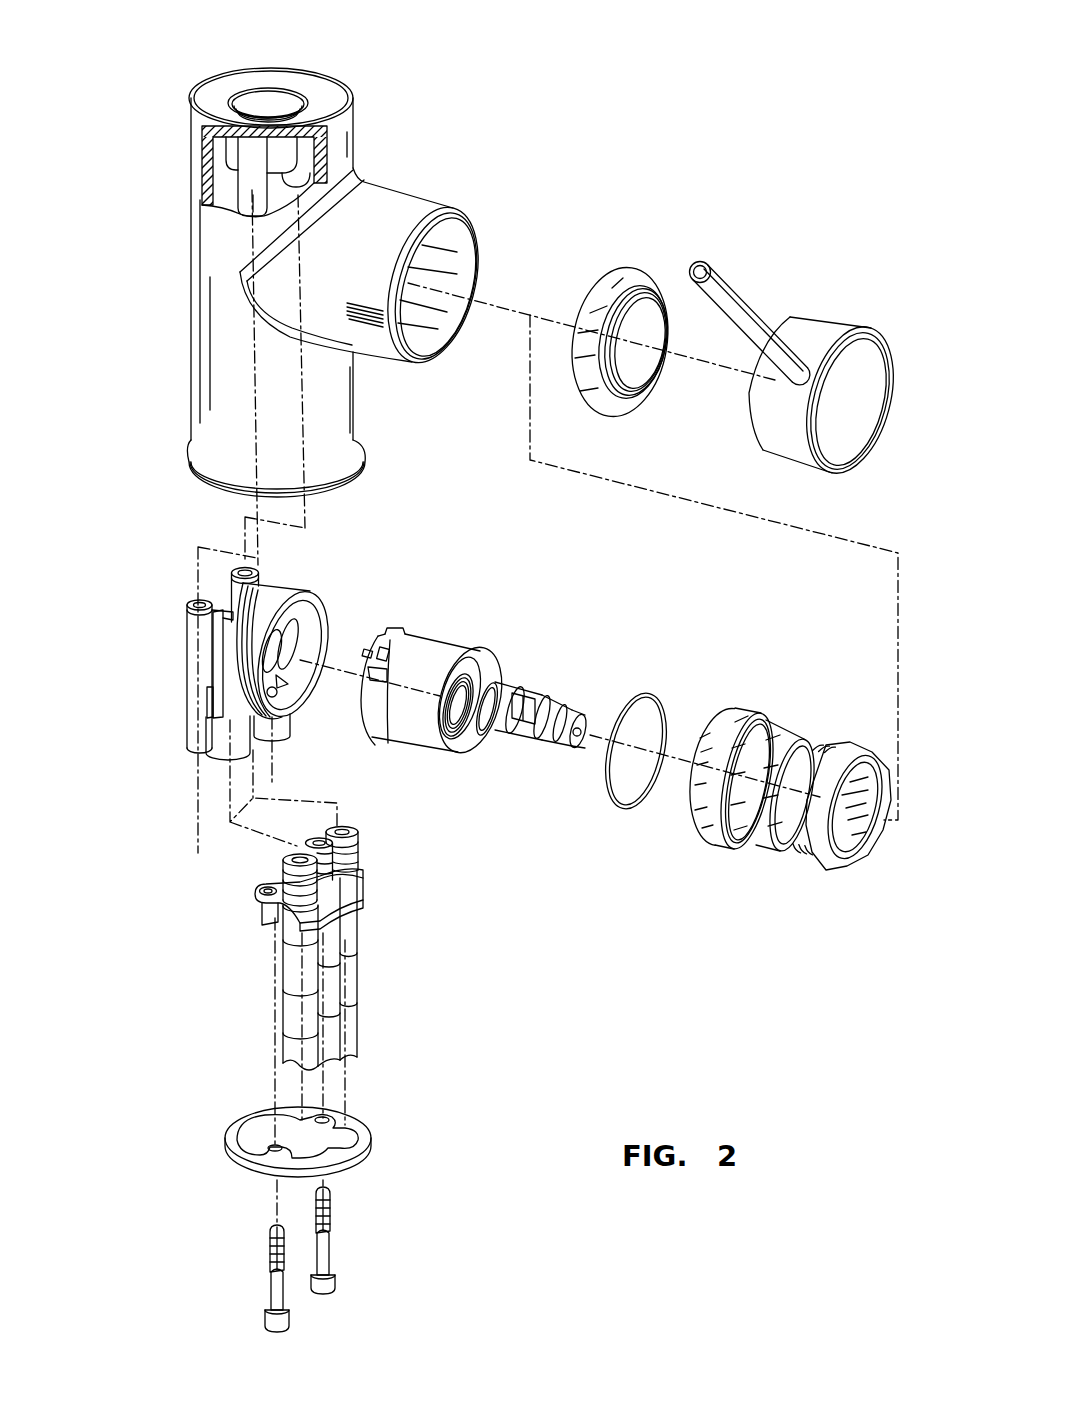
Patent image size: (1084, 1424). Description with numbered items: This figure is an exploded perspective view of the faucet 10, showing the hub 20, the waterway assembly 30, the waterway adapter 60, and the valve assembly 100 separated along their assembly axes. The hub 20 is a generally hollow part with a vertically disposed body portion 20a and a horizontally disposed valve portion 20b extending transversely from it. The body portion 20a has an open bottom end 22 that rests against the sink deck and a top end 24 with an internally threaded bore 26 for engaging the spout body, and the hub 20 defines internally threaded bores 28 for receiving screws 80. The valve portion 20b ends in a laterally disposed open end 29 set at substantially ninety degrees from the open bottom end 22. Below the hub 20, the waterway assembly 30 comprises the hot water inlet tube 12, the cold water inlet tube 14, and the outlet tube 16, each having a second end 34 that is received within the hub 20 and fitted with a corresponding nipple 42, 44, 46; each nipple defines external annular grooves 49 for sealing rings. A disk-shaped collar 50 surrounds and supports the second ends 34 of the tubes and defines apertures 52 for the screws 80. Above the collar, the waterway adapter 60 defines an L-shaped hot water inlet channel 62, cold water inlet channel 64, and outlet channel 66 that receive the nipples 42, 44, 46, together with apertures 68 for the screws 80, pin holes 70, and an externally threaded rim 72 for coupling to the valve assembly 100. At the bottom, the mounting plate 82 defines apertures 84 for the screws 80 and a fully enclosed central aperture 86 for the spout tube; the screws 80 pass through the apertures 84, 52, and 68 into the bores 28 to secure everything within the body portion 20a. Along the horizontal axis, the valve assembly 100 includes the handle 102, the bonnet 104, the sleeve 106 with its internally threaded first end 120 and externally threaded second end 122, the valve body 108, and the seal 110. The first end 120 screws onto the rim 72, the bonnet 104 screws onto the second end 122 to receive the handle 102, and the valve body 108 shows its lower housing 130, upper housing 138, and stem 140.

The faucet 10 is at (731, 128).
The hot water inlet tube 12 is at (290, 1027).
The cold water inlet tube 14 is at (330, 975).
The outlet tube 16 is at (350, 1030).
The hub 20 is at (223, 338).
The body portion 20a is at (195, 180).
The valve portion 20b is at (397, 200).
The open bottom end 22 is at (212, 491).
The top end 24 is at (213, 100).
The internally threaded bore 26 is at (296, 95).
The internally threaded bores 28 is at (237, 217).
The open end 29 is at (465, 212).
The waterway assembly 30 is at (220, 990).
The second end 34 is at (394, 826).
The nipple 42 is at (282, 856).
The nipple 44 is at (363, 872).
The nipple 46 is at (358, 845).
The annular grooves 49 is at (270, 897).
The collar 50 is at (355, 903).
The apertures 52 is at (250, 887).
The waterway adapter 60 is at (177, 665).
The hot water inlet channel 62 is at (218, 765).
The cold water inlet channel 64 is at (262, 756).
The outlet channel 66 is at (284, 740).
The apertures 68 is at (263, 565).
The pin holes 70 is at (279, 694).
The externally threaded rim 72 is at (300, 590).
The screws 80 is at (330, 1212).
The mounting plate 82 is at (367, 1132).
The apertures 84 is at (265, 1150).
The central aperture 86 is at (258, 1135).
The valve assembly 100 is at (758, 895).
The handle 102 is at (822, 328).
The bonnet 104 is at (627, 277).
The sleeve 106 is at (790, 730).
The valve body 108 is at (450, 650).
The seal 110 is at (654, 695).
The internally threaded first end 120 is at (686, 848).
The externally threaded second end 122 is at (850, 882).
The lower housing 130 is at (400, 634).
The upper housing 138 is at (521, 680).
The stem 140 is at (520, 698).